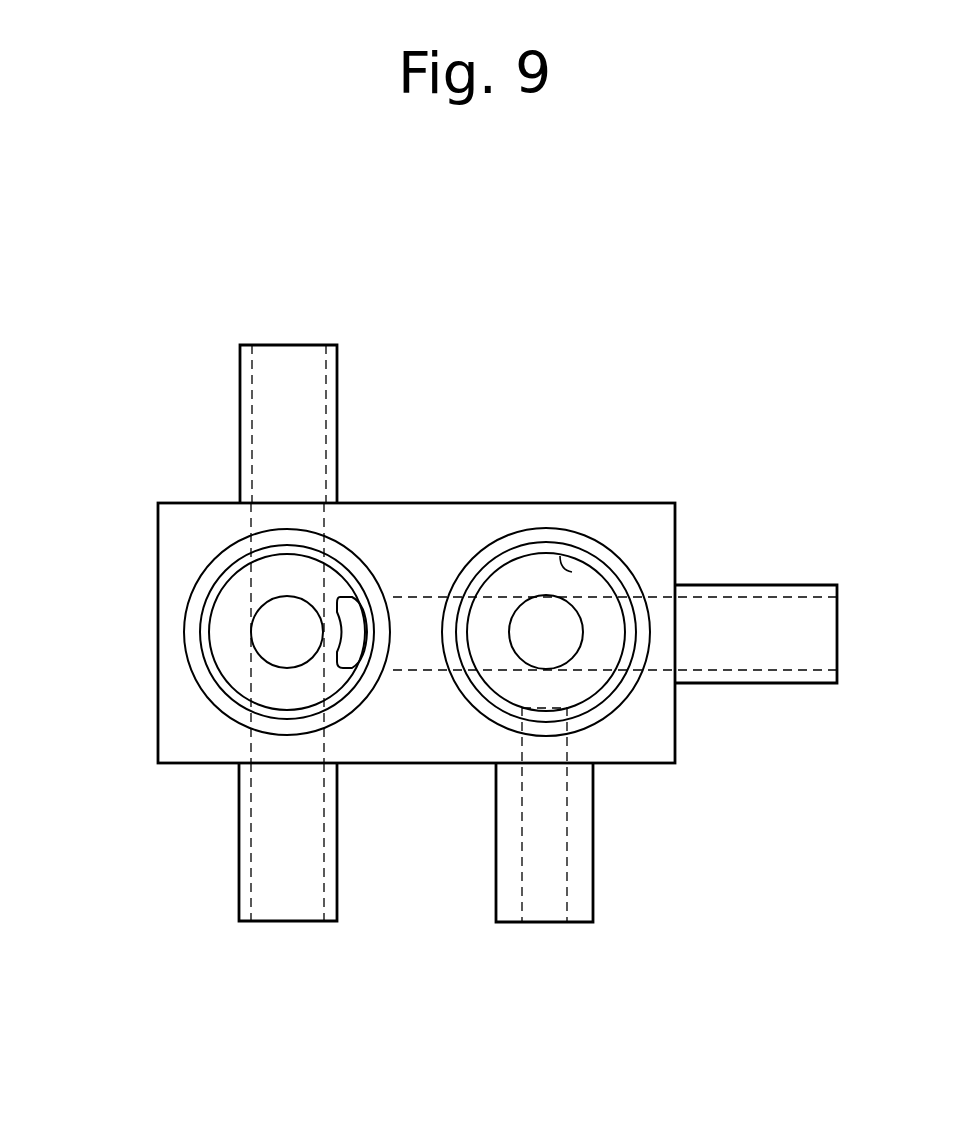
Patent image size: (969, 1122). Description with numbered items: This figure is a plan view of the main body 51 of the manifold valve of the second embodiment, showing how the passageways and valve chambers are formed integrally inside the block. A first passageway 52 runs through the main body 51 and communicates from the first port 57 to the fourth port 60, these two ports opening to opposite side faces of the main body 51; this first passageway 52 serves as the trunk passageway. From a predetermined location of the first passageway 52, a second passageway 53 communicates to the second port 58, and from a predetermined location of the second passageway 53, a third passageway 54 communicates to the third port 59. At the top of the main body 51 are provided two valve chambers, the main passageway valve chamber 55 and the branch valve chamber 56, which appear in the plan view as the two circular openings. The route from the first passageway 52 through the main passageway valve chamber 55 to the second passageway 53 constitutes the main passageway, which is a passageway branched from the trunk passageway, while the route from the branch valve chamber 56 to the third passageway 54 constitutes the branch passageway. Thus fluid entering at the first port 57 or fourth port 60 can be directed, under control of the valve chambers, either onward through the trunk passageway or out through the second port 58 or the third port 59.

The main body 51 is at (667, 730).
The first passageway 52 is at (258, 770).
The second passageway 53 is at (583, 593).
The third passageway 54 is at (563, 818).
The main passageway valve chamber 55 is at (213, 620).
The branch valve chamber 56 is at (572, 572).
The first port 57 is at (288, 923).
The second port 58 is at (838, 632).
The third port 59 is at (537, 923).
The fourth port 60 is at (295, 343).